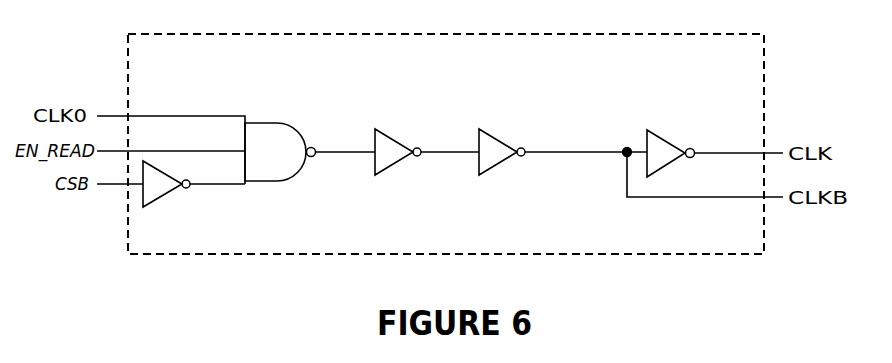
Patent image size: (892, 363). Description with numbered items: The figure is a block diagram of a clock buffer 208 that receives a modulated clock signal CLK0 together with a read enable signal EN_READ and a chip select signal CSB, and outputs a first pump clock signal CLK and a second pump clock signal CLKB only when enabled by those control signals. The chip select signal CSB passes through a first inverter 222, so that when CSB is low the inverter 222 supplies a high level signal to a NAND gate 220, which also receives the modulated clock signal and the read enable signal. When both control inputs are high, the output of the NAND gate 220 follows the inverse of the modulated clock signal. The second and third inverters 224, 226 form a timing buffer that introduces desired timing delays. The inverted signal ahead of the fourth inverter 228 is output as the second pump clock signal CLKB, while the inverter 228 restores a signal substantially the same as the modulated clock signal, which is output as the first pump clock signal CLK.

The clock buffer 208 is at (152, 33).
The NAND gate 220 is at (270, 123).
The first inverter 222 is at (163, 200).
The second inverter 224 is at (389, 167).
The third inverter 226 is at (495, 167).
The fourth inverter 228 is at (662, 137).